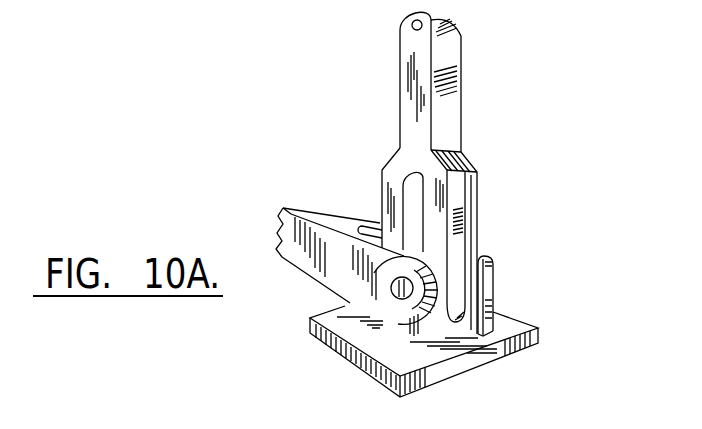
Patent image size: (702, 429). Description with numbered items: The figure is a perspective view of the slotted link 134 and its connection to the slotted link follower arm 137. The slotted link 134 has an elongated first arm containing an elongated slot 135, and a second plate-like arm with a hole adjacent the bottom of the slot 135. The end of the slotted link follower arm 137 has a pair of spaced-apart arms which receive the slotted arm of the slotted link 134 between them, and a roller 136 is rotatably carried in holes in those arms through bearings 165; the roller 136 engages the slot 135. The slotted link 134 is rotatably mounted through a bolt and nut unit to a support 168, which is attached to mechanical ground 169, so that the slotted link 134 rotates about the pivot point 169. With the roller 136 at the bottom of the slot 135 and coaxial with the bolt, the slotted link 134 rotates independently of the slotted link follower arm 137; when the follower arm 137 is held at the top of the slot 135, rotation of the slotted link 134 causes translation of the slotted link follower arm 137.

The slotted link 134 is at (456, 173).
The elongated slot 135 is at (421, 191).
The roller 136 is at (391, 285).
The slotted link follower arm 137 is at (297, 210).
The bearings 165 is at (476, 233).
The support 168 is at (493, 292).
The pivot point 169 is at (400, 288).